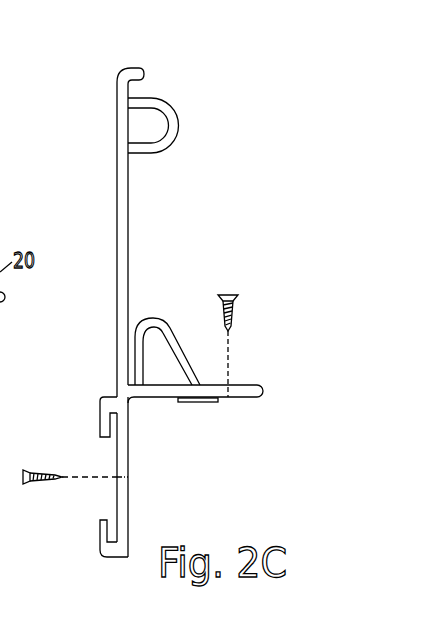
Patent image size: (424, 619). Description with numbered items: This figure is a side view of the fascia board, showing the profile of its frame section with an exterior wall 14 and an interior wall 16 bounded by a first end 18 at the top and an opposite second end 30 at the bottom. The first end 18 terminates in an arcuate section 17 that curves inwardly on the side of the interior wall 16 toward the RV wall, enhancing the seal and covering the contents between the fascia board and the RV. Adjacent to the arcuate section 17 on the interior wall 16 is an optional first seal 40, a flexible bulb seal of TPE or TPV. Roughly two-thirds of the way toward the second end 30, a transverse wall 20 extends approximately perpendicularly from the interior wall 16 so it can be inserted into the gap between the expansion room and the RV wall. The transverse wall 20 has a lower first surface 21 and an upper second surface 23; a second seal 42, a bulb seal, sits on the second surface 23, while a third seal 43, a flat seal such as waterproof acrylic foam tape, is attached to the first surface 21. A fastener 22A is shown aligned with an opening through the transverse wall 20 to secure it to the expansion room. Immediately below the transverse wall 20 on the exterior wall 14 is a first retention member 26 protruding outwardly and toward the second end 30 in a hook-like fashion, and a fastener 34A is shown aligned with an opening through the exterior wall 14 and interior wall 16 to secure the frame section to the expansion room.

The exterior wall 14 is at (116, 277).
The interior wall 16 is at (130, 252).
The arcuate section 17 is at (130, 71).
The first end 18 is at (139, 63).
The first seal 40 is at (175, 135).
The second seal 42 is at (158, 322).
The transverse wall 20 is at (253, 386).
The first surface 21 is at (247, 399).
The third seal 43 is at (192, 403).
The fastener 22A is at (227, 293).
The first retention member 26 is at (98, 420).
The fastener 34A is at (35, 470).
The second end 30 is at (110, 559).
The second surface 23 is at (0, 238).